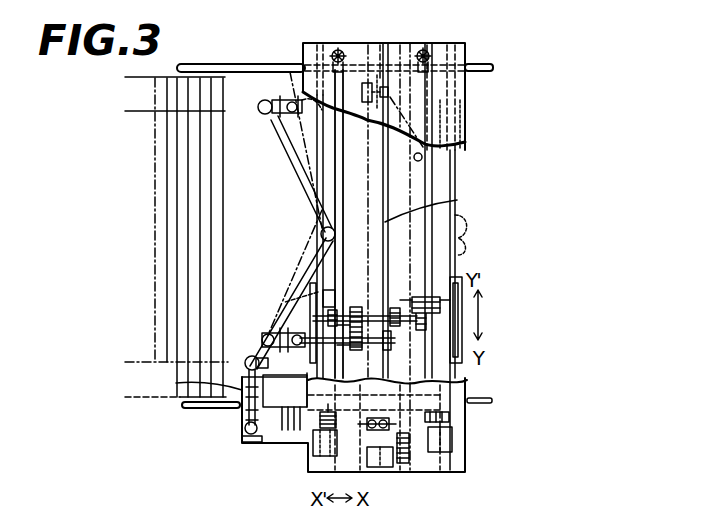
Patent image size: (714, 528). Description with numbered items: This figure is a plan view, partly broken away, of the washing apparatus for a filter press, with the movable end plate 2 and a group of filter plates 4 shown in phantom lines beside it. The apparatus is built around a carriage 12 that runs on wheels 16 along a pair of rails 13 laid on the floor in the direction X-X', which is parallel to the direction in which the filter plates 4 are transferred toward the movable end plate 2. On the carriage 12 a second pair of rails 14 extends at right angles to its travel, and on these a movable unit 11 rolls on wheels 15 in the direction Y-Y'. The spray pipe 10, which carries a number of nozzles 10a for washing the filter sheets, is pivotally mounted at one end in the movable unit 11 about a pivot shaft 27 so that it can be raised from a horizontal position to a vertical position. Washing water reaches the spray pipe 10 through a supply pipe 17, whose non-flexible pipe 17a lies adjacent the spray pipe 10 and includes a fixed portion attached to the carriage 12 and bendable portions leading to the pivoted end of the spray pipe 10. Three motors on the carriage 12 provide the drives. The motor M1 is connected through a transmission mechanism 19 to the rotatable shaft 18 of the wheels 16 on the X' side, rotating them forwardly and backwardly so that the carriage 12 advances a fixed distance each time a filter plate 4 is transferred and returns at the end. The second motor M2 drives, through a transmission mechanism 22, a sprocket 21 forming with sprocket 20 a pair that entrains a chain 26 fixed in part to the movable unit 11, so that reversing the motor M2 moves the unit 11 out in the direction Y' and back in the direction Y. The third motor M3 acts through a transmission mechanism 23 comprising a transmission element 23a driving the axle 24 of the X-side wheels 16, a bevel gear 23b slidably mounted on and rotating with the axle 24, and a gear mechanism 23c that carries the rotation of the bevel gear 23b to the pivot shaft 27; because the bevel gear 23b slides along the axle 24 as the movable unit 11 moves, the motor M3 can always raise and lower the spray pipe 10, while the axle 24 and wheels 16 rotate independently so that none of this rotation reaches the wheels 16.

The movable end plate 2 is at (440, 185).
The filter plates 4 is at (216, 212).
The spray pipe 10 is at (291, 98).
The nozzles 10a is at (268, 114).
The movable unit 11 is at (349, 318).
The carriage 12 is at (466, 94).
The rails 13 is at (248, 63).
The rails 14 is at (300, 172).
The wheels 15 is at (318, 260).
The wheels 16 is at (345, 52).
The supply pipe 17 is at (236, 414).
The non-flexible pipe 17a is at (191, 383).
The rotatable shaft 18 is at (325, 132).
The transmission mechanism 19 is at (340, 430).
The sprocket 20 is at (382, 80).
The sprocket 21 is at (390, 474).
The transmission mechanism 22 is at (420, 448).
The transmission mechanism 23 is at (398, 306).
The transmission element 23a is at (450, 413).
The bevel gear 23b is at (440, 312).
The gear mechanism 23c is at (364, 307).
The axle 24 is at (458, 139).
The chain 26 is at (458, 201).
The pivot shaft 27 is at (292, 303).
The motor M1 is at (312, 458).
The second motor M2 is at (400, 470).
The third motor M3 is at (454, 441).